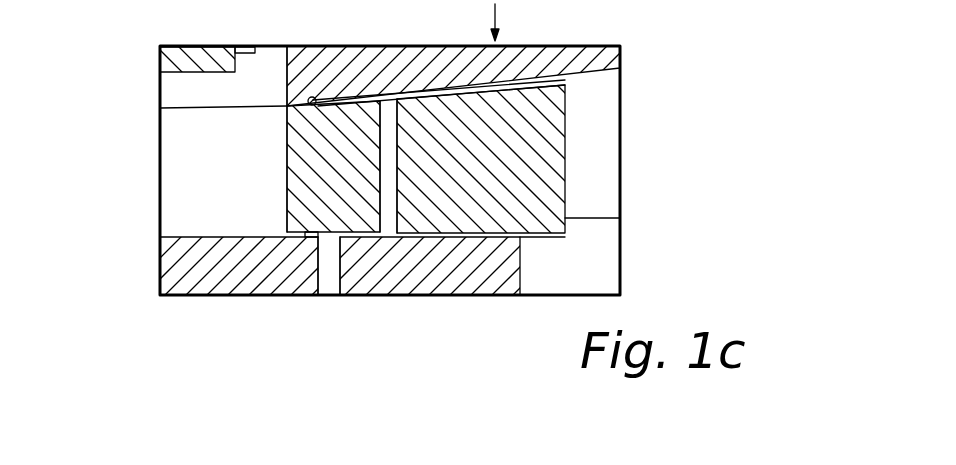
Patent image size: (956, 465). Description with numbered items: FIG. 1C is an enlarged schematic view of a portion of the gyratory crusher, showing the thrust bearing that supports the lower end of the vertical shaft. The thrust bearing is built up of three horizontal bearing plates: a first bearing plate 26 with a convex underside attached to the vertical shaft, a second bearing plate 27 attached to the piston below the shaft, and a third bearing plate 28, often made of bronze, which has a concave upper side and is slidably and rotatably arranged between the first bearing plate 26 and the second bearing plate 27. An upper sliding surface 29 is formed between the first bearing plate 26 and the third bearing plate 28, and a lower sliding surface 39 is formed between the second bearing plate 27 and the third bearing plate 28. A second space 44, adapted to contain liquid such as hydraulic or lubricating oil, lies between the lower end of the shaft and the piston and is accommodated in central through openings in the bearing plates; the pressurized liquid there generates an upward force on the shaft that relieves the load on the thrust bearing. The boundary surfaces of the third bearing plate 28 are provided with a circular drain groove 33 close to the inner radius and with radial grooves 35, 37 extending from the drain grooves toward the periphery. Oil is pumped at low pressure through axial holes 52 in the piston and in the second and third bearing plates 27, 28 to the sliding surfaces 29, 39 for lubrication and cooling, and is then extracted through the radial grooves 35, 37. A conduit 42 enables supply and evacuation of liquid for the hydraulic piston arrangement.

The first bearing plate 26 is at (622, 58).
The second bearing plate 27 is at (505, 268).
The third bearing plate 28 is at (558, 148).
The upper sliding surface 29 is at (476, 85).
The circular drain groove 33 is at (318, 237).
The radial groove 35 is at (312, 96).
The radial groove 37 is at (418, 238).
The lower sliding surface 39 is at (468, 237).
The conduit 42 is at (413, 97).
The second space 44 is at (185, 138).
The axial holes 52 is at (388, 155).